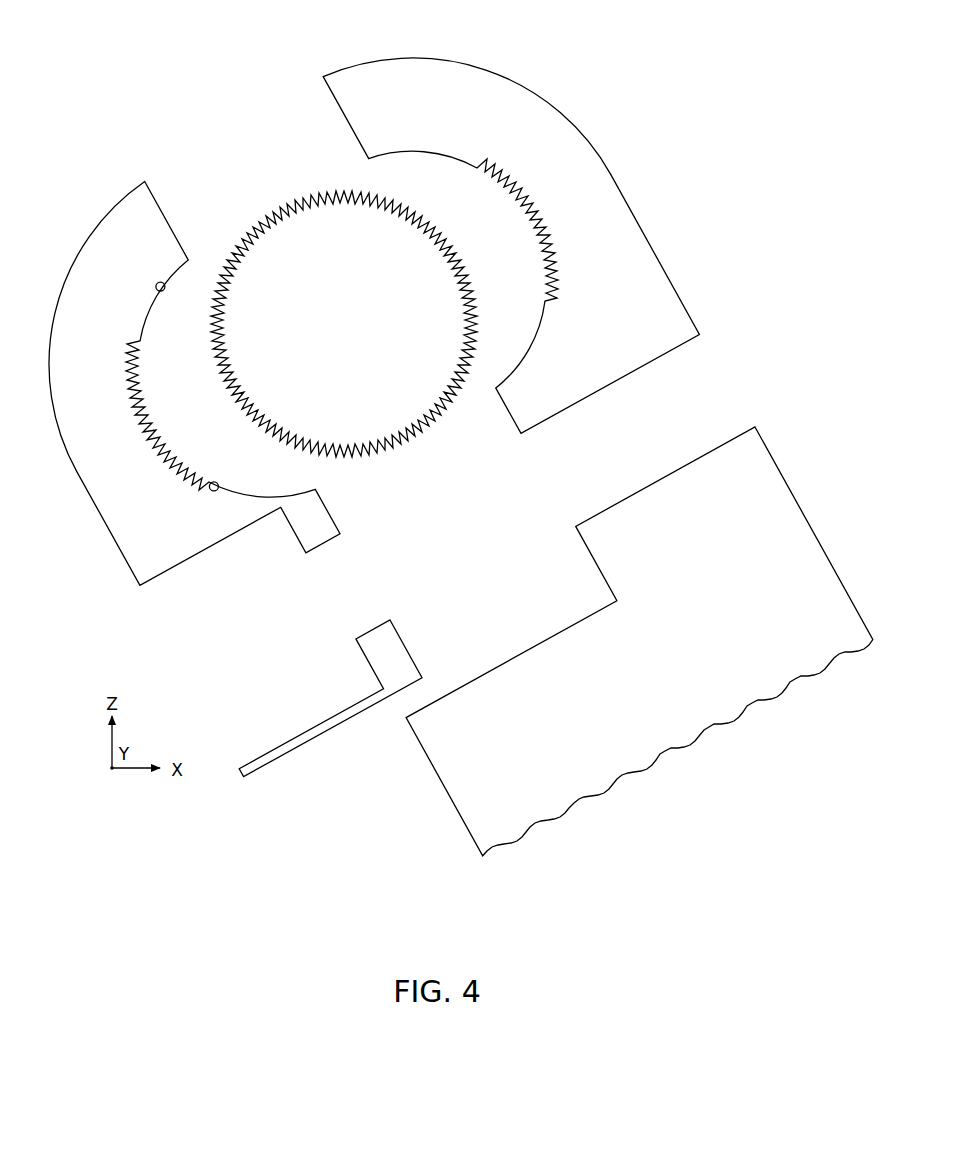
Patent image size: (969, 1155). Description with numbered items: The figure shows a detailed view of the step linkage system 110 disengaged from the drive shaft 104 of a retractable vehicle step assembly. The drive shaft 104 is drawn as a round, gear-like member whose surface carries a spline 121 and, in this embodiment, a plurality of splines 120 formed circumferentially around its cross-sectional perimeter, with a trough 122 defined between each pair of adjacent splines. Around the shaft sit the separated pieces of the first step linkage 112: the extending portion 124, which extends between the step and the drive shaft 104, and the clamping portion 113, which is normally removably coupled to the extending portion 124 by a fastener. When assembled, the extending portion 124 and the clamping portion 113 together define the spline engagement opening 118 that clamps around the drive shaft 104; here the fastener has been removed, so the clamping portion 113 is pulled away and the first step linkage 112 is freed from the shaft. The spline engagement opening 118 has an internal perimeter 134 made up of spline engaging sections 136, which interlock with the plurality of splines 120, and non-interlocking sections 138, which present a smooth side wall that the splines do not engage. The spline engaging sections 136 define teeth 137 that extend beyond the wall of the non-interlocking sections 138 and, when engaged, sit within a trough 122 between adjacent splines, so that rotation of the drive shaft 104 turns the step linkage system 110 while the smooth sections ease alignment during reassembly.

The step linkage system 110 is at (131, 85).
The drive shaft 104 is at (246, 145).
The first step linkage 112 is at (672, 164).
The clamping portion 113 is at (94, 229).
The internal perimeter 134 is at (158, 292).
The spline engaging sections 136 is at (180, 407).
The teeth 137 is at (189, 431).
The spline engagement opening 118 is at (126, 428).
The non-interlocking sections 138 is at (214, 488).
The trough 122 is at (317, 447).
The spline 121 is at (342, 458).
The plurality of splines 120 is at (443, 487).
The extending portion 124 is at (824, 546).